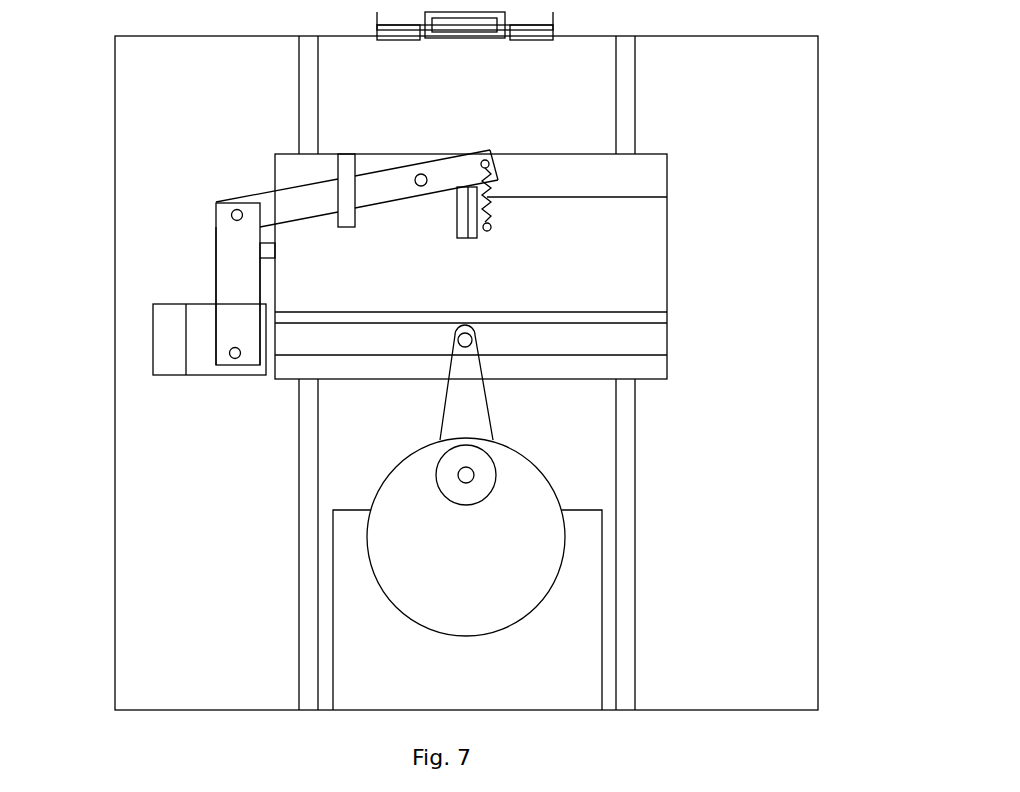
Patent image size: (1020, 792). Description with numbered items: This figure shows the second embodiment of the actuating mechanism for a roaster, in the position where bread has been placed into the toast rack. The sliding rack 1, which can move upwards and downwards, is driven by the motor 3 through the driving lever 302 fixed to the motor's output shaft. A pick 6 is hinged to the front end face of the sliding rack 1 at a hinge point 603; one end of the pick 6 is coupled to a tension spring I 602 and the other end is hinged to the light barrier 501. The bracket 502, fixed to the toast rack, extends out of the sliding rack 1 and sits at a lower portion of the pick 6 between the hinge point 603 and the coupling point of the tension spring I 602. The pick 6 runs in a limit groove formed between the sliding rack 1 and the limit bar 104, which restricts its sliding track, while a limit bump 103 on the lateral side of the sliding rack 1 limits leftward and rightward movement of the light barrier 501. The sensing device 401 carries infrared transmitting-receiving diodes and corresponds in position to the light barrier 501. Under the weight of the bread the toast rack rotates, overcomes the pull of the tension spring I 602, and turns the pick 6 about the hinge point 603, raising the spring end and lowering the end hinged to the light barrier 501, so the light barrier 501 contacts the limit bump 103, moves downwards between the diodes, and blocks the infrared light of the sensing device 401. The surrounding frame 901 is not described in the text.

The sliding rack 1 is at (567, 233).
The motor 3 is at (500, 517).
The pick 6 is at (328, 205).
The limit bump 103 is at (259, 245).
The limit bar 104 is at (338, 163).
The driving lever 302 is at (482, 393).
The sensing device 401 is at (207, 342).
The light barrier 501 is at (230, 253).
The bracket 502 is at (472, 242).
The tension spring I 602 is at (493, 217).
The hinge point 603 is at (419, 174).
The frame 901 is at (162, 472).